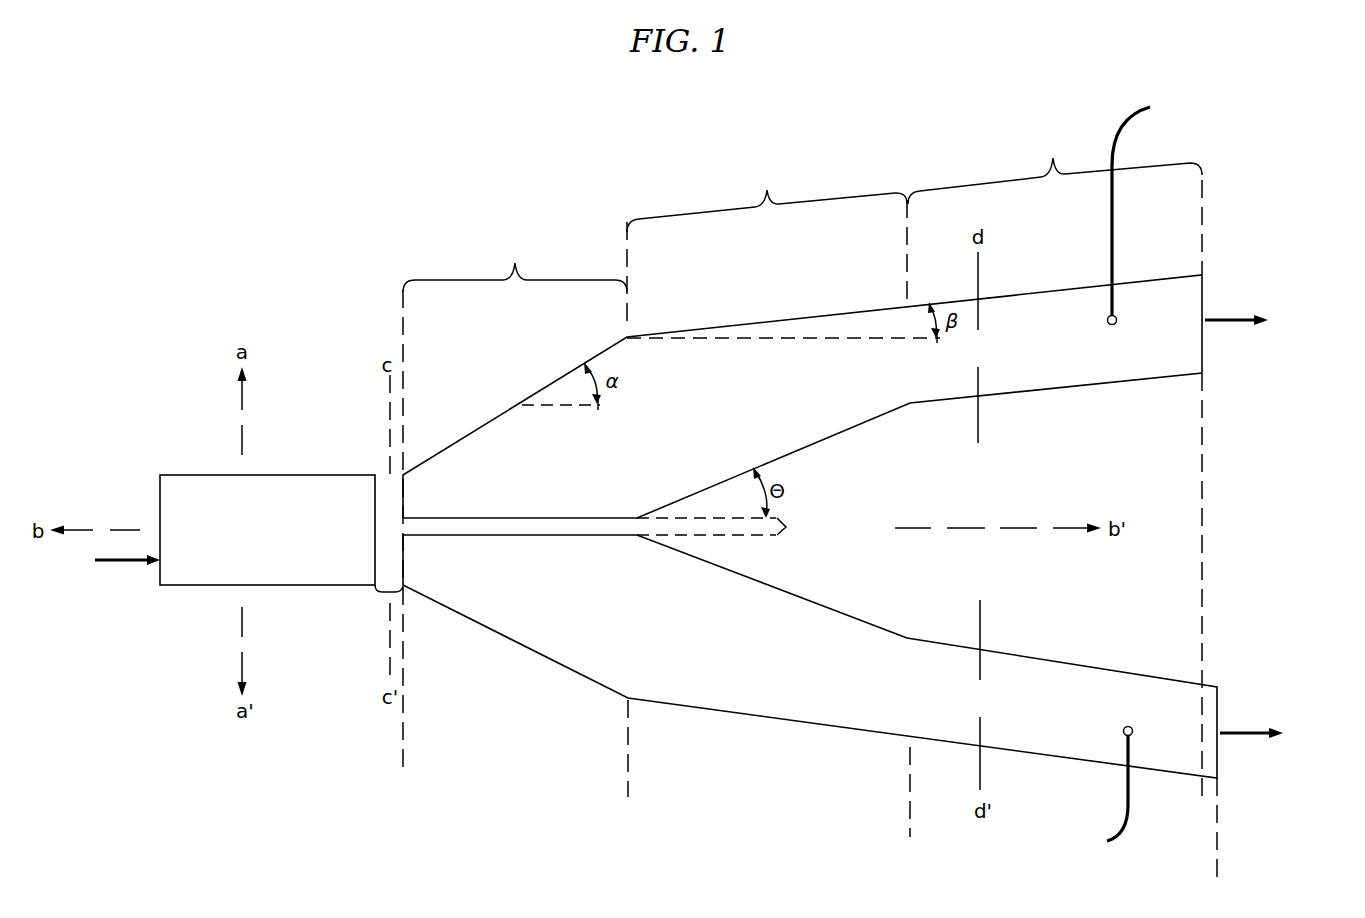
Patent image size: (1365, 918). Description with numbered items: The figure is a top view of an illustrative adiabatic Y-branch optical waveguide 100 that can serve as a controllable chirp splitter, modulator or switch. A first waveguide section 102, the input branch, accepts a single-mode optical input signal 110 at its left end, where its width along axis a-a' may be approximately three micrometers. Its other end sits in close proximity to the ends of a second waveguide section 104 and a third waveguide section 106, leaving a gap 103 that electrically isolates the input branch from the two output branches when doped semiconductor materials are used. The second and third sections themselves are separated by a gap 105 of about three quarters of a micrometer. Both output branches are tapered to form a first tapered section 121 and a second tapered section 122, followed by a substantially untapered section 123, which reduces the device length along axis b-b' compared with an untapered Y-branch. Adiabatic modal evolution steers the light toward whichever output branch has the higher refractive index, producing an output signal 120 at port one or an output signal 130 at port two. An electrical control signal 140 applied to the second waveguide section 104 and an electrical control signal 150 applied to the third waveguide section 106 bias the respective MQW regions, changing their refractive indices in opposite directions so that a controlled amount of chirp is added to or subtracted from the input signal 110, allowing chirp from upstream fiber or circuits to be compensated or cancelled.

The adiabatic Y-branch optical waveguide 100 is at (555, 150).
The first waveguide section 102 is at (318, 490).
The gap 103 is at (391, 594).
The second waveguide section 104 is at (822, 330).
The gap 105 is at (731, 527).
The third waveguide section 106 is at (1077, 683).
The optical input signal 110 is at (118, 573).
The output signal 120 is at (1276, 326).
The first tapered section 121 is at (515, 265).
The second tapered section 122 is at (767, 197).
The substantially untapered section 123 is at (1055, 168).
The output signal 130 is at (1291, 737).
The electrical control signal 140 is at (1149, 203).
The electrical control signal 150 is at (1100, 797).